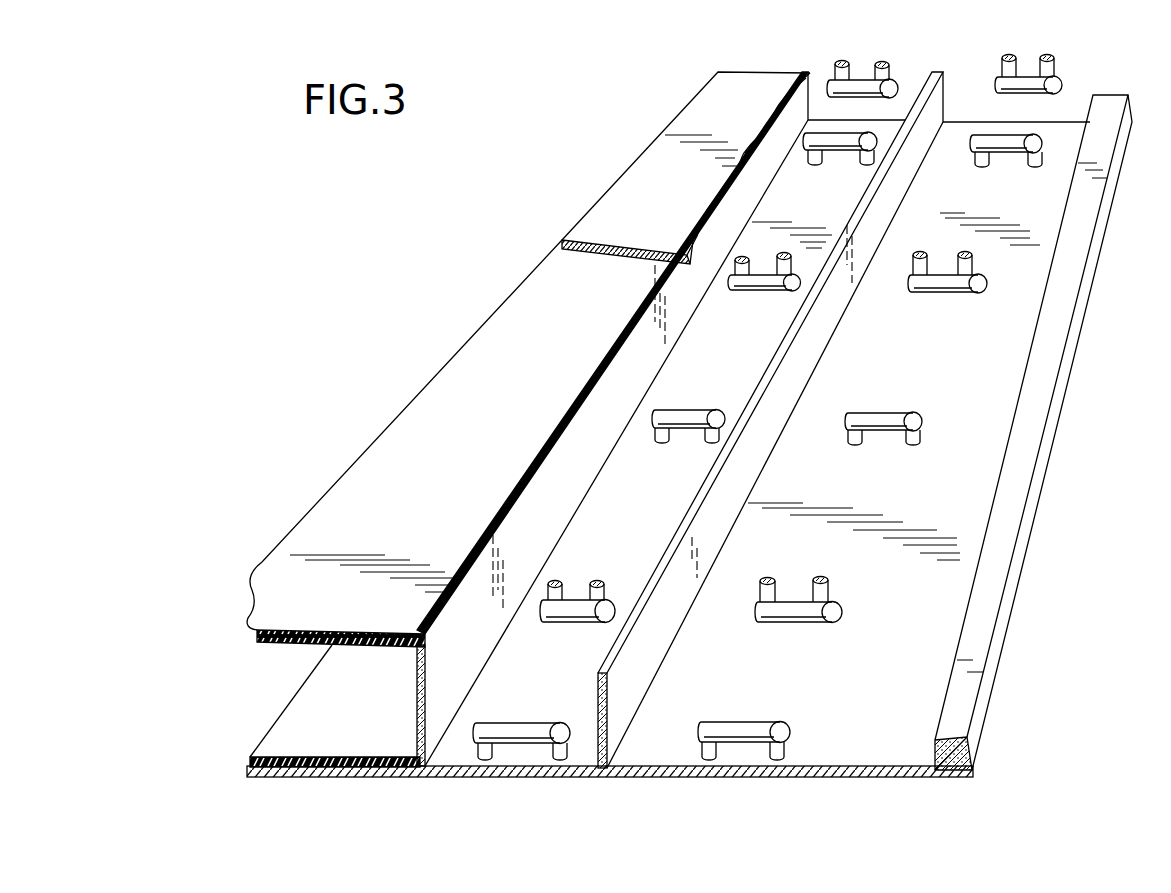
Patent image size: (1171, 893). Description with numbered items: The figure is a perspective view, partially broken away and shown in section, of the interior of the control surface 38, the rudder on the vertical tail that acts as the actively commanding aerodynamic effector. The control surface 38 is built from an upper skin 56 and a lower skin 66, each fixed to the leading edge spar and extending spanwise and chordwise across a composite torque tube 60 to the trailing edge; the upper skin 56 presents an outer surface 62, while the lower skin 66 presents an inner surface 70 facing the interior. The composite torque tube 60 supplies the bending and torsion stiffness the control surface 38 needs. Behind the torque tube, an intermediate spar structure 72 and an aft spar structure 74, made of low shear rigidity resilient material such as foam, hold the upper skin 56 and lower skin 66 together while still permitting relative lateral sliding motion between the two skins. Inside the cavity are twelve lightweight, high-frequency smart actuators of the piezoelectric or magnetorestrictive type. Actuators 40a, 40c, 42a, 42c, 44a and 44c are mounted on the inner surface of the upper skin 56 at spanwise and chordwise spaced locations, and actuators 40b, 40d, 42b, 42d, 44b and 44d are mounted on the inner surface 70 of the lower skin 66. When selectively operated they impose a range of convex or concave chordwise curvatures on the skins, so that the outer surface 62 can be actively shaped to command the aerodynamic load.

The control surface 38 is at (1102, 308).
The smart actuator 40a is at (578, 601).
The smart actuator 40b is at (517, 736).
The smart actuator 40c is at (798, 607).
The smart actuator 40d is at (753, 724).
The smart actuator 42a is at (757, 291).
The smart actuator 42b is at (685, 429).
The smart actuator 42c is at (947, 292).
The smart actuator 42d is at (884, 413).
The smart actuator 44a is at (862, 80).
The smart actuator 44b is at (838, 151).
The smart actuator 44c is at (1030, 77).
The smart actuator 44d is at (1008, 153).
The upper skin 56 is at (602, 251).
The composite torque tube 60 is at (380, 447).
The outer surface 62 is at (645, 162).
The lower skin 66 is at (832, 776).
The inner surface 70 is at (662, 762).
The intermediate spar structure 72 is at (597, 757).
The aft spar structure 74 is at (954, 773).